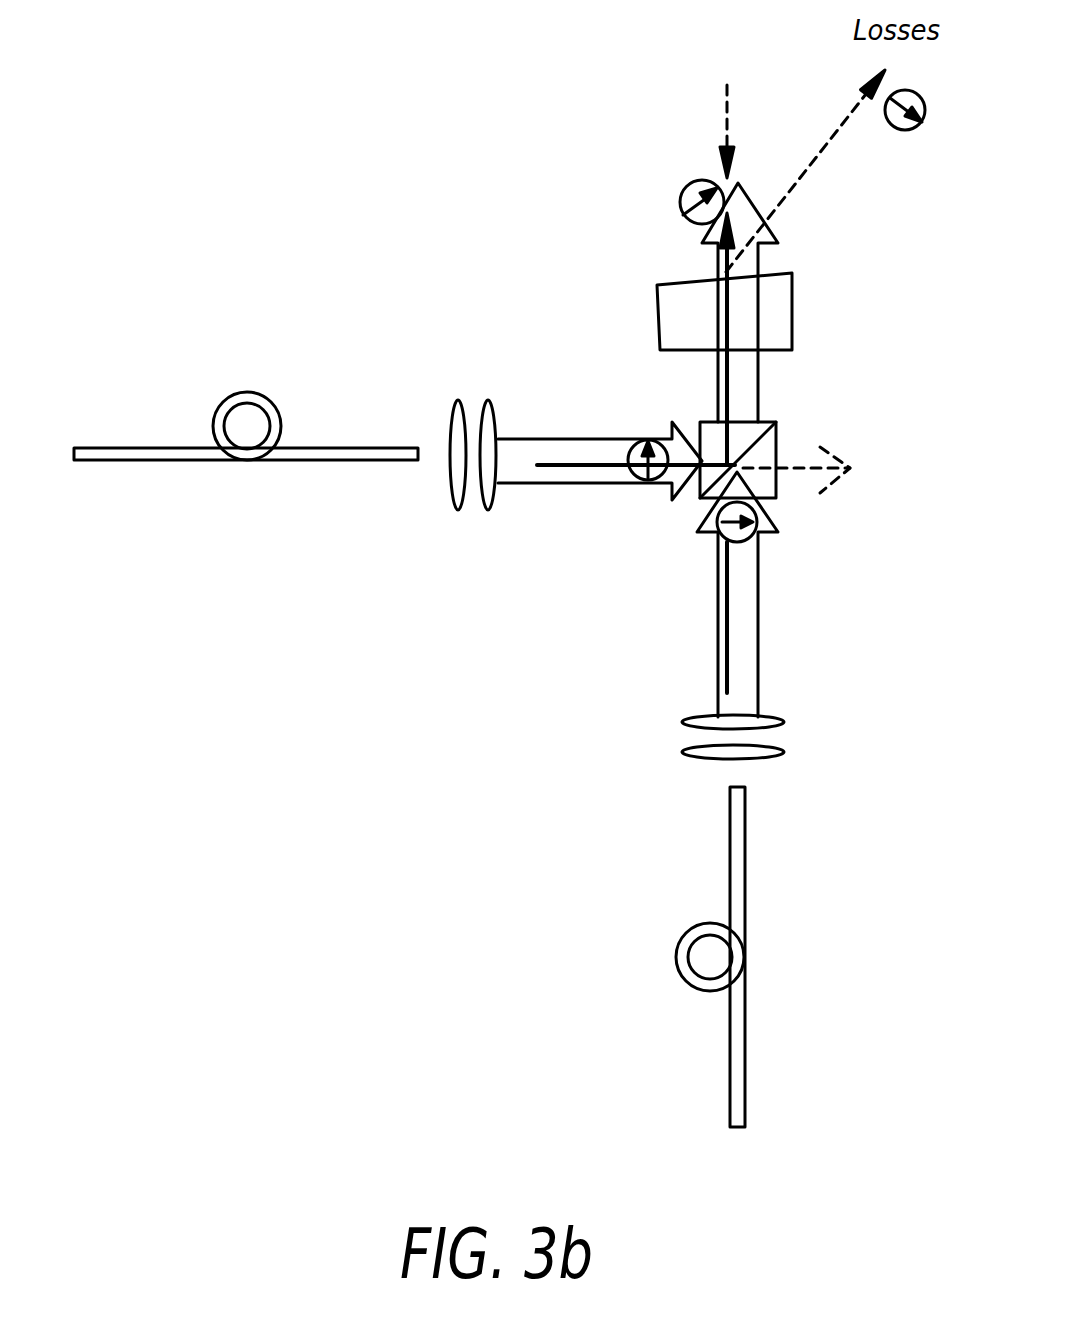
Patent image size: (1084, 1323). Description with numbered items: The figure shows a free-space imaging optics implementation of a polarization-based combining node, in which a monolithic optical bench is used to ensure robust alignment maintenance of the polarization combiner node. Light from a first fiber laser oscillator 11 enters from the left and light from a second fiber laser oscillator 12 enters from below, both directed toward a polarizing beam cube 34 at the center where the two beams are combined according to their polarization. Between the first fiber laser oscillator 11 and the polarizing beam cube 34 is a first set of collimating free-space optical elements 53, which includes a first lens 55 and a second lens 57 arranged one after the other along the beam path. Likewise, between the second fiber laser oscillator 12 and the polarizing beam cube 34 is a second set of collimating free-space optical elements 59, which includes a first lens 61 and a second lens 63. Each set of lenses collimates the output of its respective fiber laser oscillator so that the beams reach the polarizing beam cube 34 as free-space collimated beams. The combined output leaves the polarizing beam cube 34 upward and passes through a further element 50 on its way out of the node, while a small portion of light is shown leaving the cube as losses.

The first fiber laser oscillator 11 is at (148, 450).
The second fiber laser oscillator 12 is at (745, 863).
The polarizing beam cube 34 is at (777, 437).
The Faraday rotator / garnet element 50 is at (792, 313).
The first set of collimating free-space optical elements 53 is at (466, 427).
The first lens 55 is at (452, 490).
The second lens 57 is at (493, 490).
The second set of collimating free-space optical elements 59 is at (730, 737).
The first lens 61 is at (775, 715).
The second lens 63 is at (762, 757).